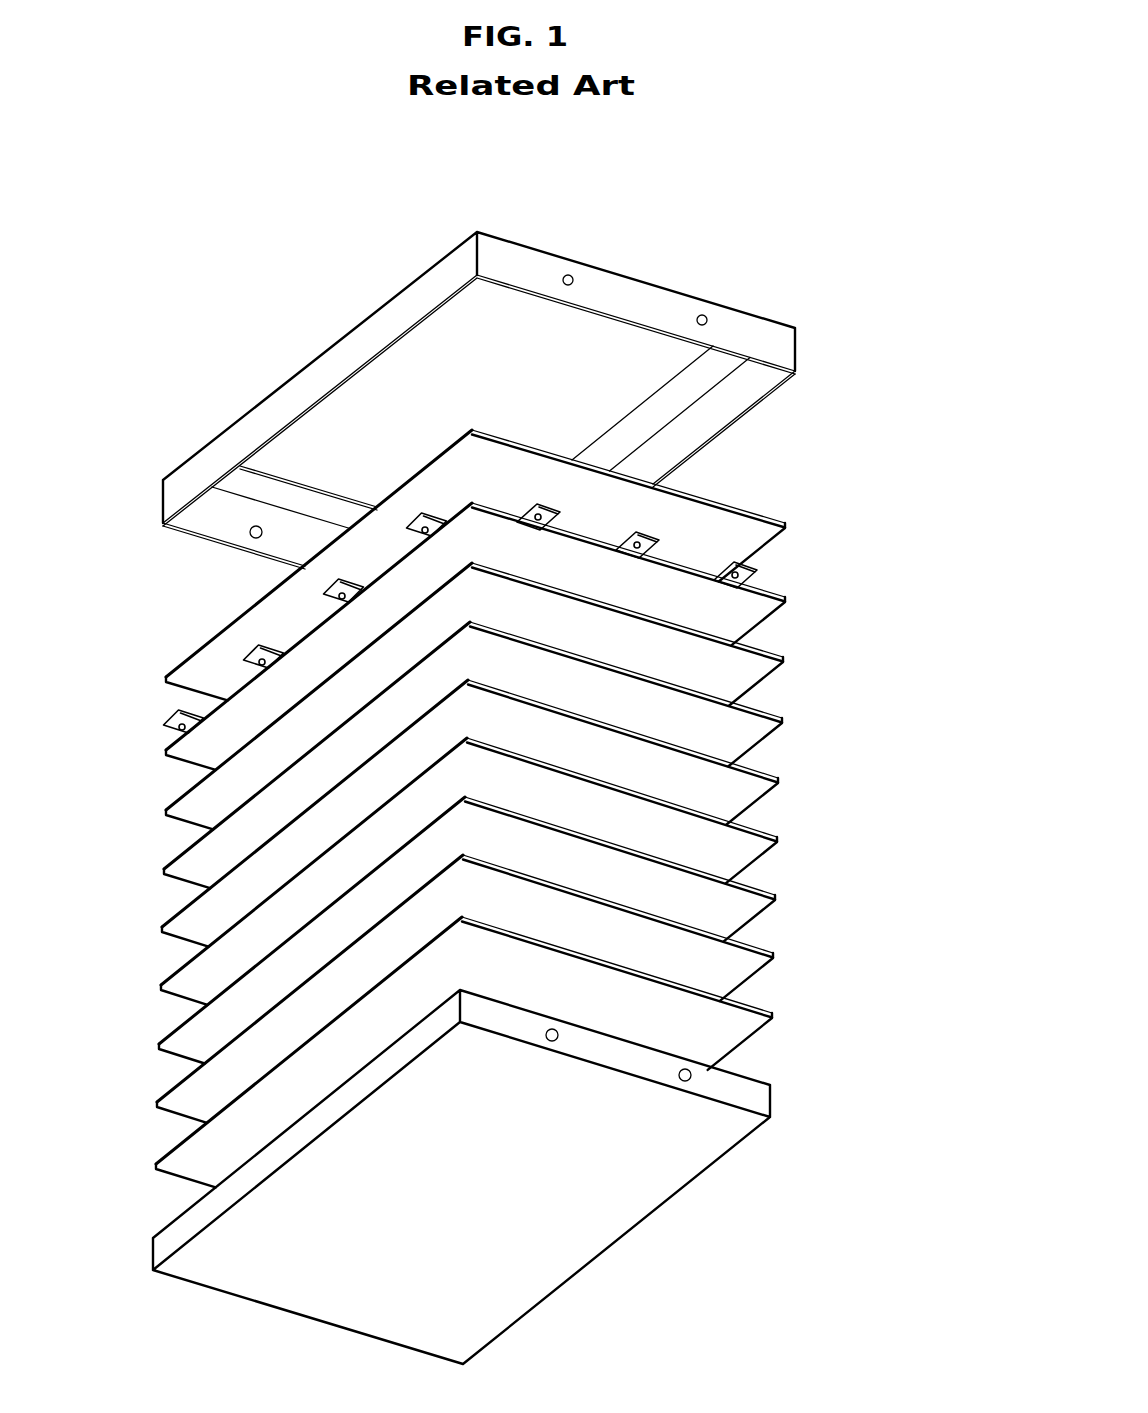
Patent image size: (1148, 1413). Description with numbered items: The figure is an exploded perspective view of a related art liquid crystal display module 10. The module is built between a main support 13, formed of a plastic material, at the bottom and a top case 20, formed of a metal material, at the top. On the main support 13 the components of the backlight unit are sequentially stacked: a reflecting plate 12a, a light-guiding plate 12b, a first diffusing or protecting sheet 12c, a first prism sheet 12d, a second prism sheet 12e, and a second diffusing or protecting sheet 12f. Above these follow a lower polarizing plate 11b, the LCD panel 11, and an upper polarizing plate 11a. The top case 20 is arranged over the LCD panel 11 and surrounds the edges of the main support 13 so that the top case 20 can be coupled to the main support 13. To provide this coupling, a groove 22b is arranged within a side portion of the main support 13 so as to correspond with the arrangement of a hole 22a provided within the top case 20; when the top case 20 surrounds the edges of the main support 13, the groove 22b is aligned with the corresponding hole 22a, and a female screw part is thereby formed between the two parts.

The backlight unit 10 is at (773, 176).
The top case 20 is at (796, 350).
The hole 22a is at (700, 315).
The upper polarizing plate 11a is at (765, 522).
The LCD panel 11 is at (765, 596).
The lower polarizing plate 11b is at (765, 656).
The second diffusing or protecting sheet 12f is at (765, 717).
The second prism sheet 12e is at (765, 778).
The first prism sheet 12d is at (765, 838).
The first diffusing or protecting sheet 12c is at (765, 896).
The light-guiding plate 12b is at (765, 955).
The reflecting plate 12a is at (765, 1015).
The main support 13 is at (758, 1099).
The groove 22b is at (552, 1041).